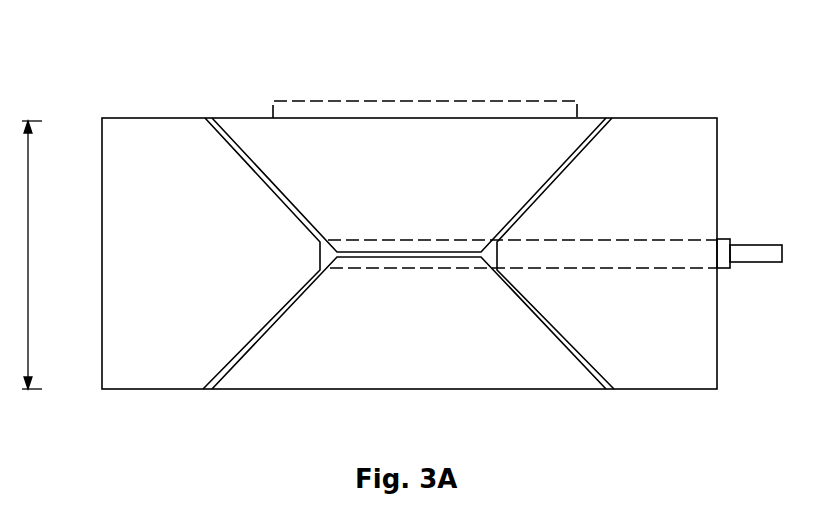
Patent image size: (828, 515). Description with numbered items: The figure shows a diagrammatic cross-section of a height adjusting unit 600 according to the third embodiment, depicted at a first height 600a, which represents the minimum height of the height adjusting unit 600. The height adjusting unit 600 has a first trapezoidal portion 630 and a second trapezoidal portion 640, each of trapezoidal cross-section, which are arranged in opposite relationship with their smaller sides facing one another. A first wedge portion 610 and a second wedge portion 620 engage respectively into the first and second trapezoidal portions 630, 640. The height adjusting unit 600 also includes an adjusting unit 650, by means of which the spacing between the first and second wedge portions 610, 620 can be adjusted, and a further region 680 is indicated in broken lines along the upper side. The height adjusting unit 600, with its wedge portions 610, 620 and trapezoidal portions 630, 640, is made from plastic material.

The height adjusting unit 600 is at (657, 110).
The first height 600a is at (53, 255).
The first wedge portion 610 is at (679, 176).
The second wedge portion 620 is at (170, 137).
The first trapezoidal portion 630 is at (308, 127).
The second trapezoidal portion 640 is at (445, 375).
The adjusting unit 650 is at (692, 268).
The top slot region 680 is at (517, 100).